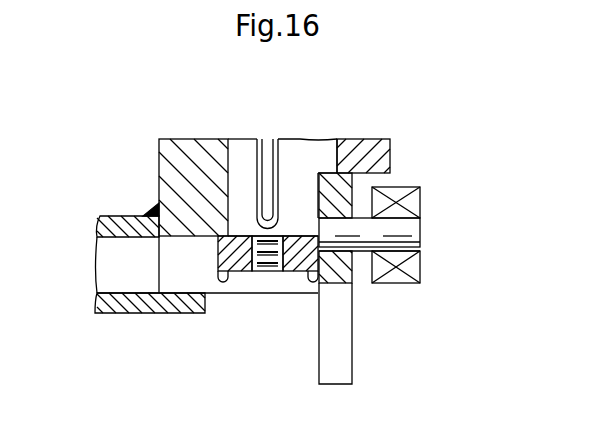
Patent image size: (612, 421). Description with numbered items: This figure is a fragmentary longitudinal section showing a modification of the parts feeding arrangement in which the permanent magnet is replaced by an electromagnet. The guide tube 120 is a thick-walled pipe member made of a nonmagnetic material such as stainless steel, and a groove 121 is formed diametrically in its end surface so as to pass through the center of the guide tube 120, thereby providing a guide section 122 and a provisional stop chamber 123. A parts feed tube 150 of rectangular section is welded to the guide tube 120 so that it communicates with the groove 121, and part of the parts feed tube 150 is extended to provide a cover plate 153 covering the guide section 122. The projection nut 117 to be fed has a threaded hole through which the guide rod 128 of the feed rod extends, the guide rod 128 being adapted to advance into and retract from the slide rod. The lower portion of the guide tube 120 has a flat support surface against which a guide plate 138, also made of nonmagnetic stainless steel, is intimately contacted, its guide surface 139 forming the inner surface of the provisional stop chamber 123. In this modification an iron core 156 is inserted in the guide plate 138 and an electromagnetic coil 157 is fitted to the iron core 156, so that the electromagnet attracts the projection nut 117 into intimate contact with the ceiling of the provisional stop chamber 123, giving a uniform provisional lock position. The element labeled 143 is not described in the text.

The projection nut 117 is at (242, 276).
The guide tube 120 is at (158, 162).
The groove 121 is at (167, 268).
The guide section 122 is at (173, 282).
The provisional stop chamber 123 is at (288, 283).
The guide rod 128 is at (256, 152).
The guide plate 138 is at (355, 368).
The guide surface 139 is at (318, 364).
The cover plate 143 is at (392, 162).
The parts feed tube 150 is at (128, 214).
The cover plate 153 is at (198, 312).
The iron core 156 is at (417, 228).
The electromagnetic coil 157 is at (422, 265).